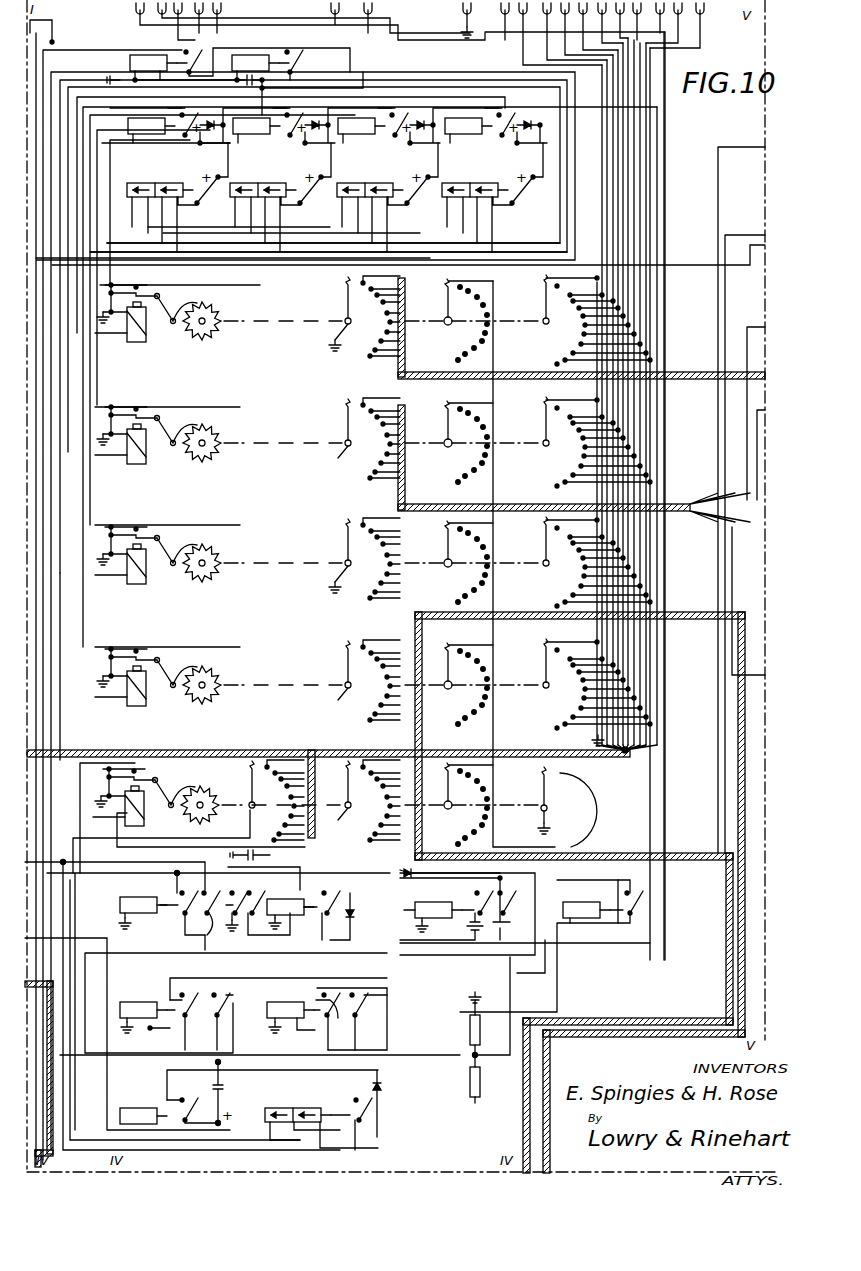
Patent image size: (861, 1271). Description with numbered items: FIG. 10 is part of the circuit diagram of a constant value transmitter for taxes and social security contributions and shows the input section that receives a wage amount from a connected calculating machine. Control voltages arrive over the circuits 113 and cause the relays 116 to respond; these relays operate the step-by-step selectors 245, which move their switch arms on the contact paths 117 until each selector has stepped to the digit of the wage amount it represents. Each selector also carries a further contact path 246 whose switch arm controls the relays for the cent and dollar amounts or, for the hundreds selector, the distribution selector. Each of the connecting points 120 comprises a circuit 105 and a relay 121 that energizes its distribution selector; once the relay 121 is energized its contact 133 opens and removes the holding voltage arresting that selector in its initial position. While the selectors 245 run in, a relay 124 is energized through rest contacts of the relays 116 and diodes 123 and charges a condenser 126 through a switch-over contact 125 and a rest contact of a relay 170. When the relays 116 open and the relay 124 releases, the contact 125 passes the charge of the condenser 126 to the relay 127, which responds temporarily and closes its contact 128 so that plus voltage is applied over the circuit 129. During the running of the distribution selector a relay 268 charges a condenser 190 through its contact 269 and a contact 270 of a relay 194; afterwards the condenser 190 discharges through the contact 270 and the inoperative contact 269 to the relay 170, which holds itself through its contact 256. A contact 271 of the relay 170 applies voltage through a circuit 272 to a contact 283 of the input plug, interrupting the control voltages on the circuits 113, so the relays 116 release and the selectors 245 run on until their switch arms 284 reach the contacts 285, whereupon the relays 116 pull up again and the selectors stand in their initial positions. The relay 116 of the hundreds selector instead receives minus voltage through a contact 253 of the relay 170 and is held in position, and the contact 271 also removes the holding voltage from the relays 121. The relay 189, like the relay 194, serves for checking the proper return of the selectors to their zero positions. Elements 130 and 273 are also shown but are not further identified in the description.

The circuits 113 is at (296, 20).
The contact 128 is at (186, 62).
The relay 127 is at (130, 63).
The switch-over contact 125 is at (300, 58).
The relay 124 is at (266, 70).
The contact of the input plug 283 is at (352, 35).
The circuit 272 is at (53, 58).
The diodes 123 is at (537, 119).
The relays 116 is at (288, 1107).
The circuit 129 is at (278, 268).
The step-by-step selectors 245 is at (217, 563).
The contact paths 246 is at (236, 574).
The switch arms 284 is at (480, 563).
The contacts 285 is at (435, 751).
The contact paths 117 is at (285, 801).
The condenser 126 is at (263, 855).
The relay 170 is at (137, 897).
The contact 271 is at (183, 914).
The contact 256 is at (218, 922).
The contact 253 is at (238, 892).
The relay 268 is at (291, 897).
The contact 269 is at (334, 916).
The conductor 273 is at (95, 940).
The relay 194 is at (436, 900).
The contact 270 is at (480, 904).
The condenser 190 is at (514, 908).
The relay 189 is at (584, 900).
The relay 121 is at (139, 1000).
The connecting points 120 is at (153, 1028).
The switch contacts 130 is at (266, 1021).
The contact 133 is at (221, 1001).
The circuit 105 is at (422, 1026).